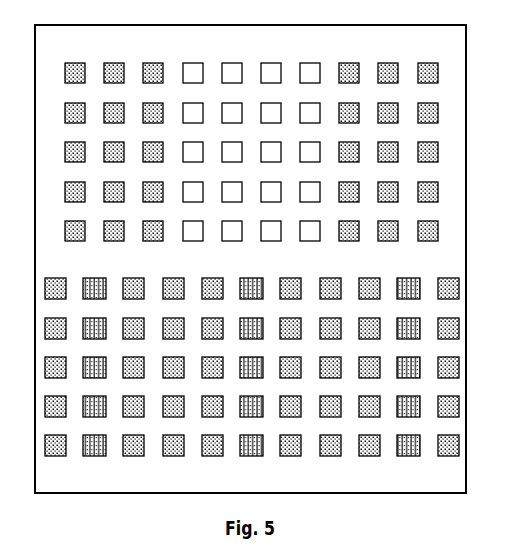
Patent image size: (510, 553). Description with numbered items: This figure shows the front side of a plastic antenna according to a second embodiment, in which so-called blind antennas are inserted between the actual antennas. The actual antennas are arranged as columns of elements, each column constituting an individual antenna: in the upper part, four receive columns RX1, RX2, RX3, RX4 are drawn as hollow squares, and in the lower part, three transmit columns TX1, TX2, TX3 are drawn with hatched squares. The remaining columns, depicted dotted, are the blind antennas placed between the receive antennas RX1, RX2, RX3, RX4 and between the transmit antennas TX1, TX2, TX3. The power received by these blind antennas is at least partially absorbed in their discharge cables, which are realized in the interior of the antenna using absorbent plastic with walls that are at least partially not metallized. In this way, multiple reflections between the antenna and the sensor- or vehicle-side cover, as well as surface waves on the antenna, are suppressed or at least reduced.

The first receive antenna column RX1 is at (184, 139).
The second receive antenna column RX2 is at (228, 139).
The third receive antenna column RX3 is at (275, 139).
The fourth receive antenna column RX4 is at (319, 139).
The first transmit antenna column TX1 is at (95, 381).
The second transmit antenna column TX2 is at (253, 381).
The third transmit antenna column TX3 is at (409, 381).